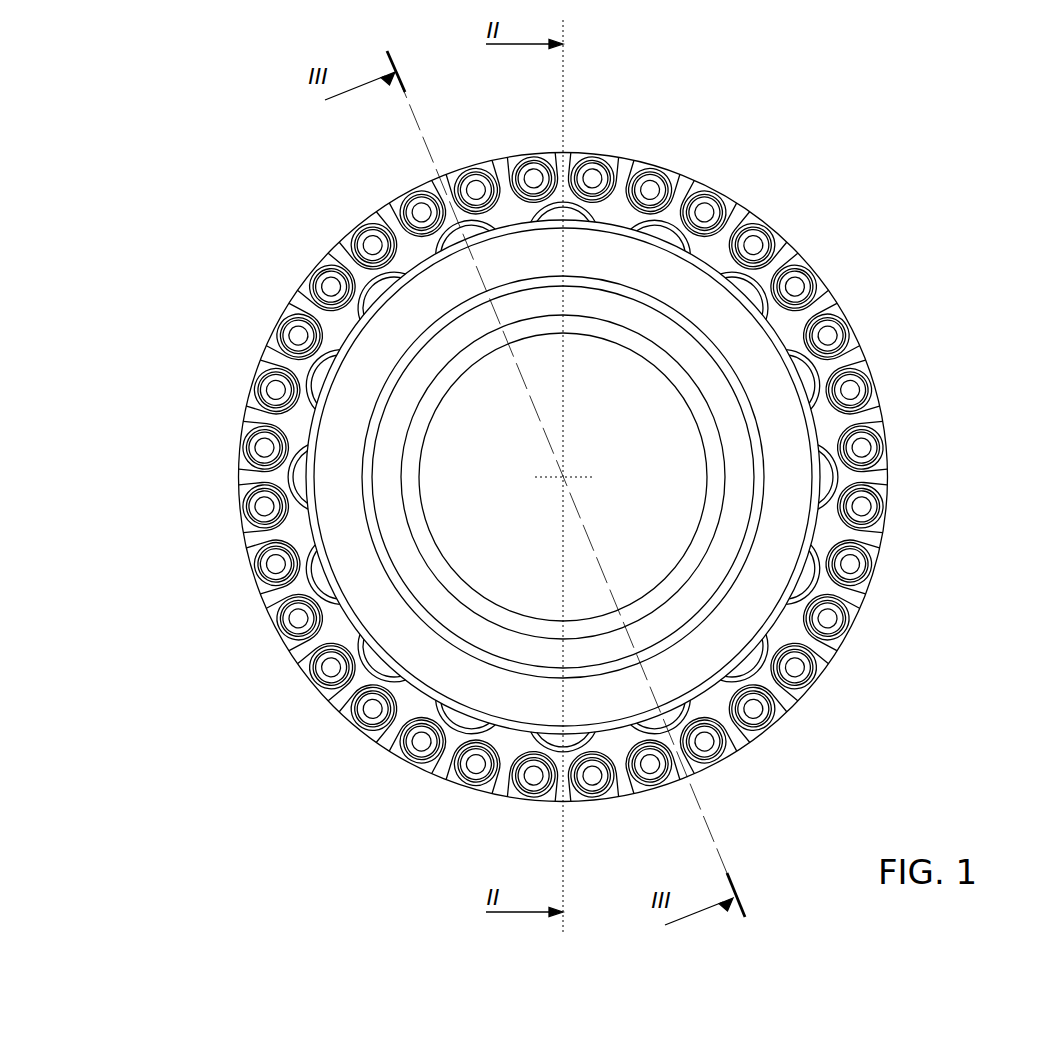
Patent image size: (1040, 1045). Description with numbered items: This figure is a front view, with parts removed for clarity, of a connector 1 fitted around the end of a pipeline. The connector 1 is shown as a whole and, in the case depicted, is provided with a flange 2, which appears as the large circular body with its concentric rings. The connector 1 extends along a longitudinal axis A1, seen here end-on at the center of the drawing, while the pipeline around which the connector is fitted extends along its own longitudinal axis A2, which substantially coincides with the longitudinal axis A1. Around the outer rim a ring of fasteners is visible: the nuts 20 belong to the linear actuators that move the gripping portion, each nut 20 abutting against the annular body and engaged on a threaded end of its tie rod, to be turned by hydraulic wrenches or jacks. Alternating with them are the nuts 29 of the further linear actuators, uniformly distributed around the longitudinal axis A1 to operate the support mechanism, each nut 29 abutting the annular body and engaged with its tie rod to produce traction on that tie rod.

The connector 1 is at (878, 157).
The flange 2 is at (750, 408).
The nut 20 is at (595, 155).
The nut 29 is at (470, 165).
The longitudinal axis A1 is at (563, 478).
The longitudinal axis A2 is at (563, 478).